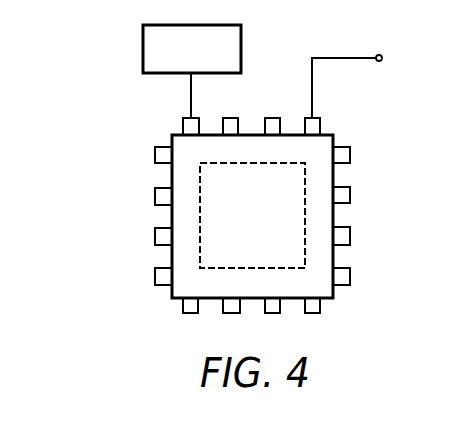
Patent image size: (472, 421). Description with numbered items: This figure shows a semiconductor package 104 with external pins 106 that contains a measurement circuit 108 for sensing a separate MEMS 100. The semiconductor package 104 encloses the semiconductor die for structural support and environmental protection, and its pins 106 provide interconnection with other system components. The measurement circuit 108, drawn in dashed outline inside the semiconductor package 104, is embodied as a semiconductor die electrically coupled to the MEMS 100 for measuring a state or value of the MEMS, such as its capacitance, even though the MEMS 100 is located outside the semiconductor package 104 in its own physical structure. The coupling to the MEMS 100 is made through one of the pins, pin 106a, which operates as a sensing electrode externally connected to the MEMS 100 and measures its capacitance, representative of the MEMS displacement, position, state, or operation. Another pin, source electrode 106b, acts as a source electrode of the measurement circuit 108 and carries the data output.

The MEMS 100 is at (241, 50).
The semiconductor package 104 is at (233, 190).
The pins 106 is at (165, 237).
The pin 106a is at (186, 128).
The source electrode 106b is at (313, 128).
The measurement circuit 108 is at (268, 227).